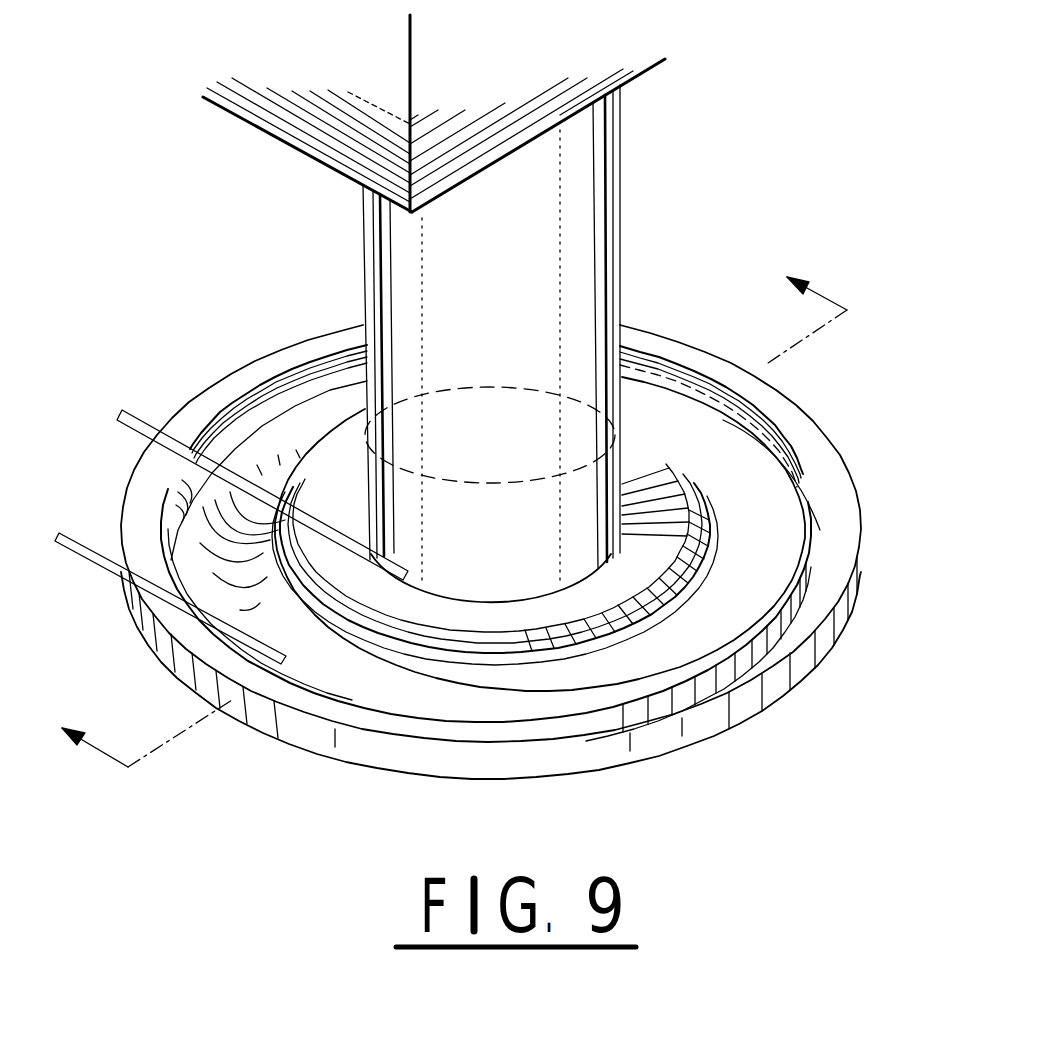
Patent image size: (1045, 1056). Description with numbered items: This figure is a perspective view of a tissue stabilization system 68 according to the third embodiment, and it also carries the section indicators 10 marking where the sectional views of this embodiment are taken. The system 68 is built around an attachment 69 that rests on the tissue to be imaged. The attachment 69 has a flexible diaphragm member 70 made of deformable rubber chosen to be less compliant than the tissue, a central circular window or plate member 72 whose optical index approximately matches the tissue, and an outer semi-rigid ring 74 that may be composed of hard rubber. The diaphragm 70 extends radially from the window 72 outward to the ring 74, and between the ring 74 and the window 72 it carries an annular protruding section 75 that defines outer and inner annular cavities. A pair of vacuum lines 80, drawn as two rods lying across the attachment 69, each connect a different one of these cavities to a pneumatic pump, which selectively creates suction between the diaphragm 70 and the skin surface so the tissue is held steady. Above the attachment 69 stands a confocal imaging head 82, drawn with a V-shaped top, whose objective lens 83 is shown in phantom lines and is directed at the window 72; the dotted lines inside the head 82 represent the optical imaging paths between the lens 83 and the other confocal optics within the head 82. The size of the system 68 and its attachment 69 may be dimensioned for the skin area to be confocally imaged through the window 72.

The tissue stabilization system 68 is at (546, 839).
The attachment 69 is at (857, 503).
The flexible diaphragm member 70 is at (680, 605).
The central circular window or plate member 72 is at (592, 578).
The semi-rigid ring 74 is at (670, 335).
The annular protruding section 75 is at (747, 517).
The vacuum lines 80 is at (125, 422).
The confocal imaging head 82 is at (310, 153).
The objective lens 83 is at (437, 392).
The section line 10 is at (448, 498).